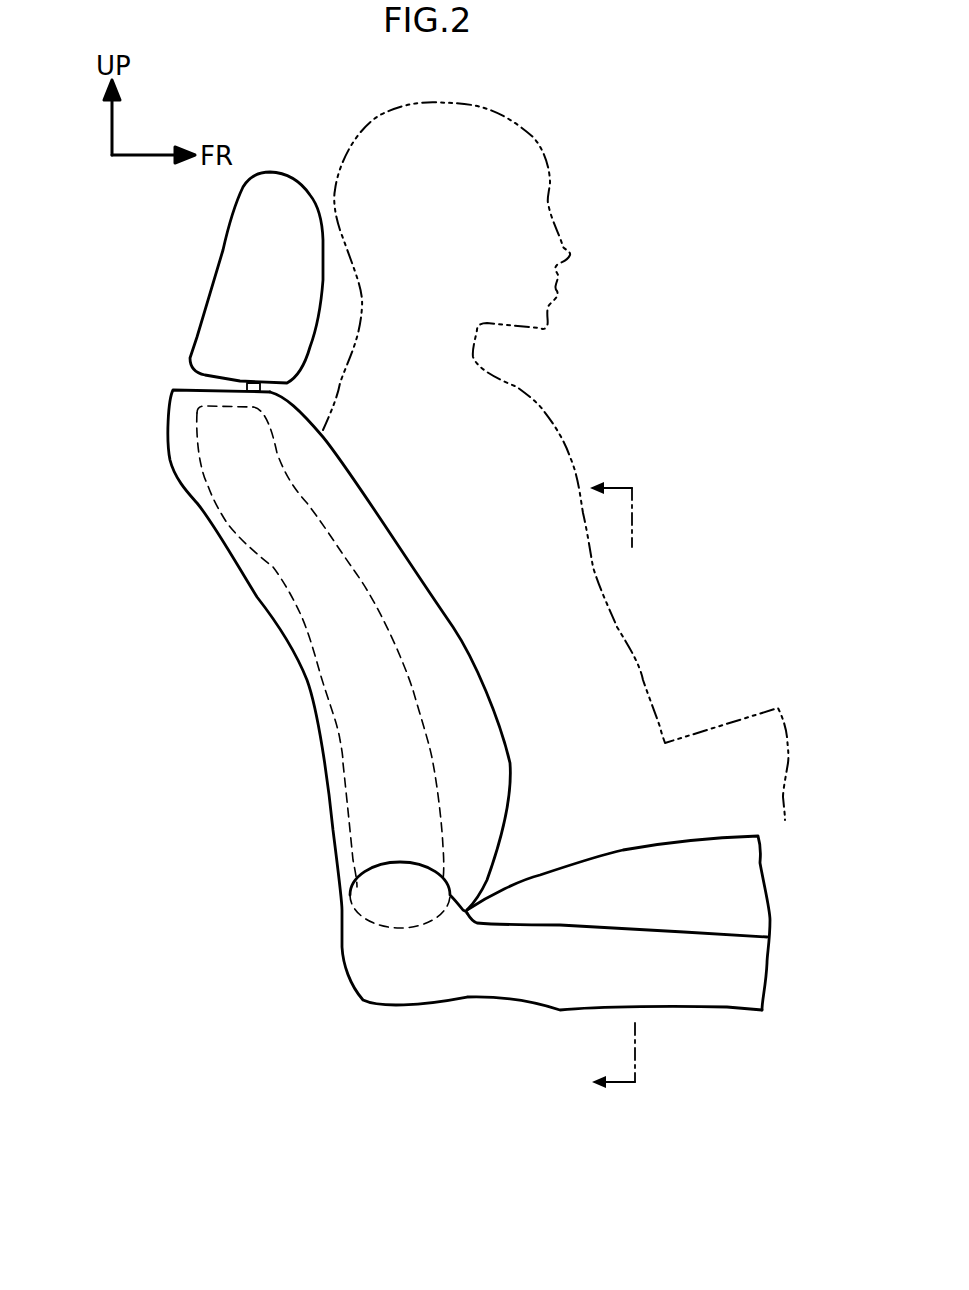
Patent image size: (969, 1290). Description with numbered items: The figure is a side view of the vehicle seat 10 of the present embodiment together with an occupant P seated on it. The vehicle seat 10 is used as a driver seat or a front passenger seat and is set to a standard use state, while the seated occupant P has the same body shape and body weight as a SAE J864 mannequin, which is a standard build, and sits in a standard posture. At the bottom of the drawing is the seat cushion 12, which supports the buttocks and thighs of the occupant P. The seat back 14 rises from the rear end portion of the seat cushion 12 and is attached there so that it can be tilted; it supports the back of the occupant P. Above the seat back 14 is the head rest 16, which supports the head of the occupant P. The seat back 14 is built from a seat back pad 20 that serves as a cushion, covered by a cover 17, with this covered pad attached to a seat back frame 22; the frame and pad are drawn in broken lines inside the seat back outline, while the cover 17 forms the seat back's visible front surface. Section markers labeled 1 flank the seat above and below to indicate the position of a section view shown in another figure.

The vehicle seat 10 is at (429, 591).
The seat cushion 12 is at (625, 848).
The seat back 14 is at (409, 700).
The head rest 16 is at (213, 285).
The cover 17 is at (383, 530).
The seat back pad 20 is at (437, 670).
The seat back frame 22 is at (297, 610).
The section line 1 is at (612, 783).
The occupant P is at (520, 382).